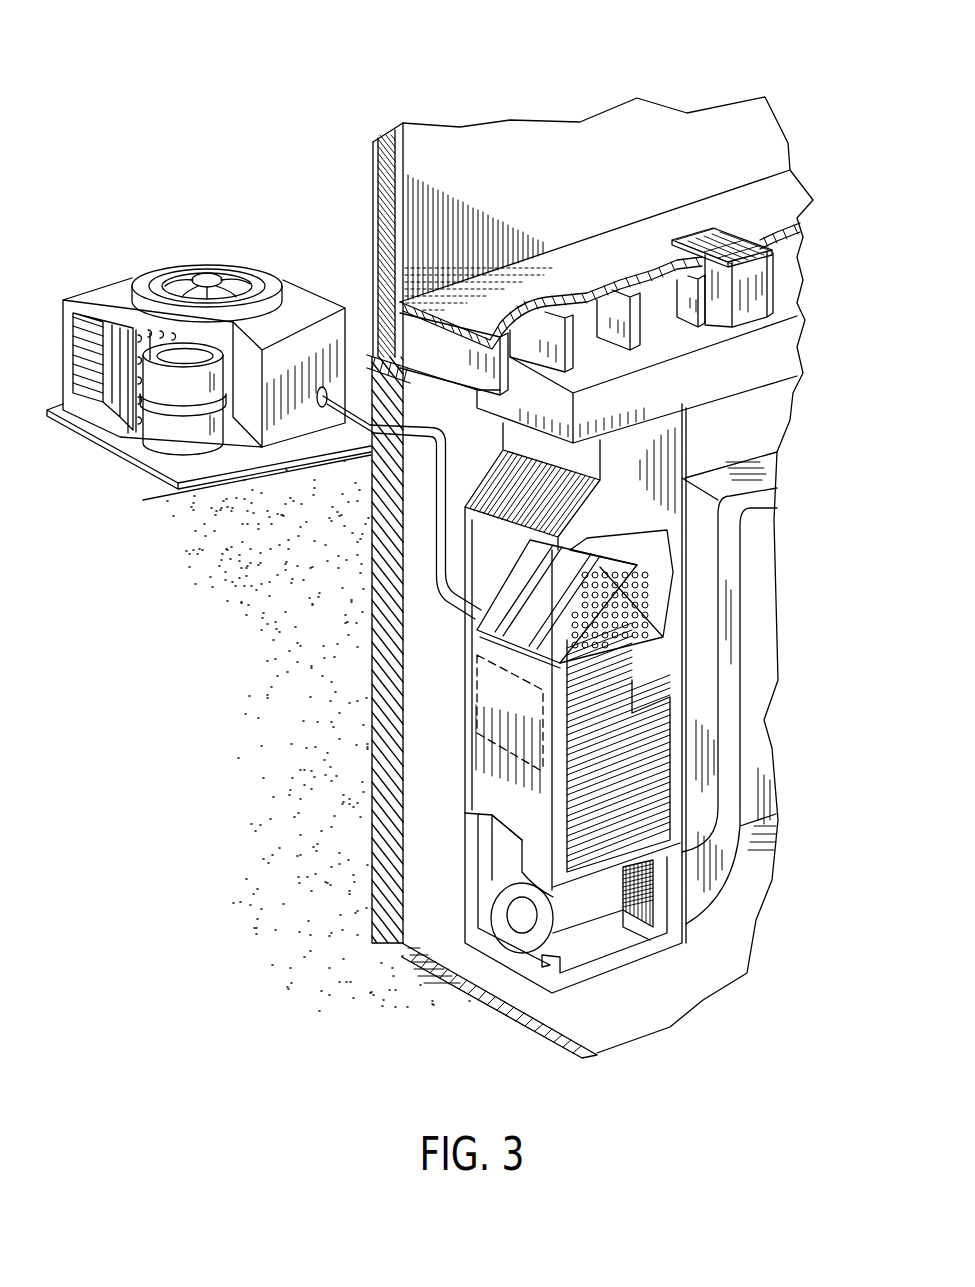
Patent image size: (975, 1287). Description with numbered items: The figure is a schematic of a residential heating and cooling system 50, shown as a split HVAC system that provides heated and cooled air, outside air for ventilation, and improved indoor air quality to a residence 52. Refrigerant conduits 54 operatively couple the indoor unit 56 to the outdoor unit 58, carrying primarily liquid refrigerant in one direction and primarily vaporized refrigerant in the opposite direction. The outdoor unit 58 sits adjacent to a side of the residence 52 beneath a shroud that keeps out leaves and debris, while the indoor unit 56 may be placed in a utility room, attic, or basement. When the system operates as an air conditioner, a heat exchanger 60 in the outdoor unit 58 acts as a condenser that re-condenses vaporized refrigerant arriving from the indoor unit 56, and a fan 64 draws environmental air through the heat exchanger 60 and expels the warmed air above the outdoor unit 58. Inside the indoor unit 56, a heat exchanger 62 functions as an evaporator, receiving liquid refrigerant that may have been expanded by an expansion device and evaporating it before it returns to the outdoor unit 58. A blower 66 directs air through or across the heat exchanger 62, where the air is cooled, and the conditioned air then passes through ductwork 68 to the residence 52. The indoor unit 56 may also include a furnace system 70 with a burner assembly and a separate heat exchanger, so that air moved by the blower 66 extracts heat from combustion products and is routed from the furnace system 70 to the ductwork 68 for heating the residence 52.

The residential heating and cooling system 50 is at (205, 92).
The residence 52 is at (505, 145).
The refrigerant conduits 54 is at (440, 508).
The indoor unit 56 is at (445, 754).
The outdoor unit 58 is at (166, 253).
The heat exchanger 60 is at (140, 330).
The heat exchanger 62 is at (527, 627).
The fan 64 is at (222, 268).
The blower 66 is at (515, 933).
The ductwork 68 is at (727, 365).
The furnace system 70 is at (477, 700).